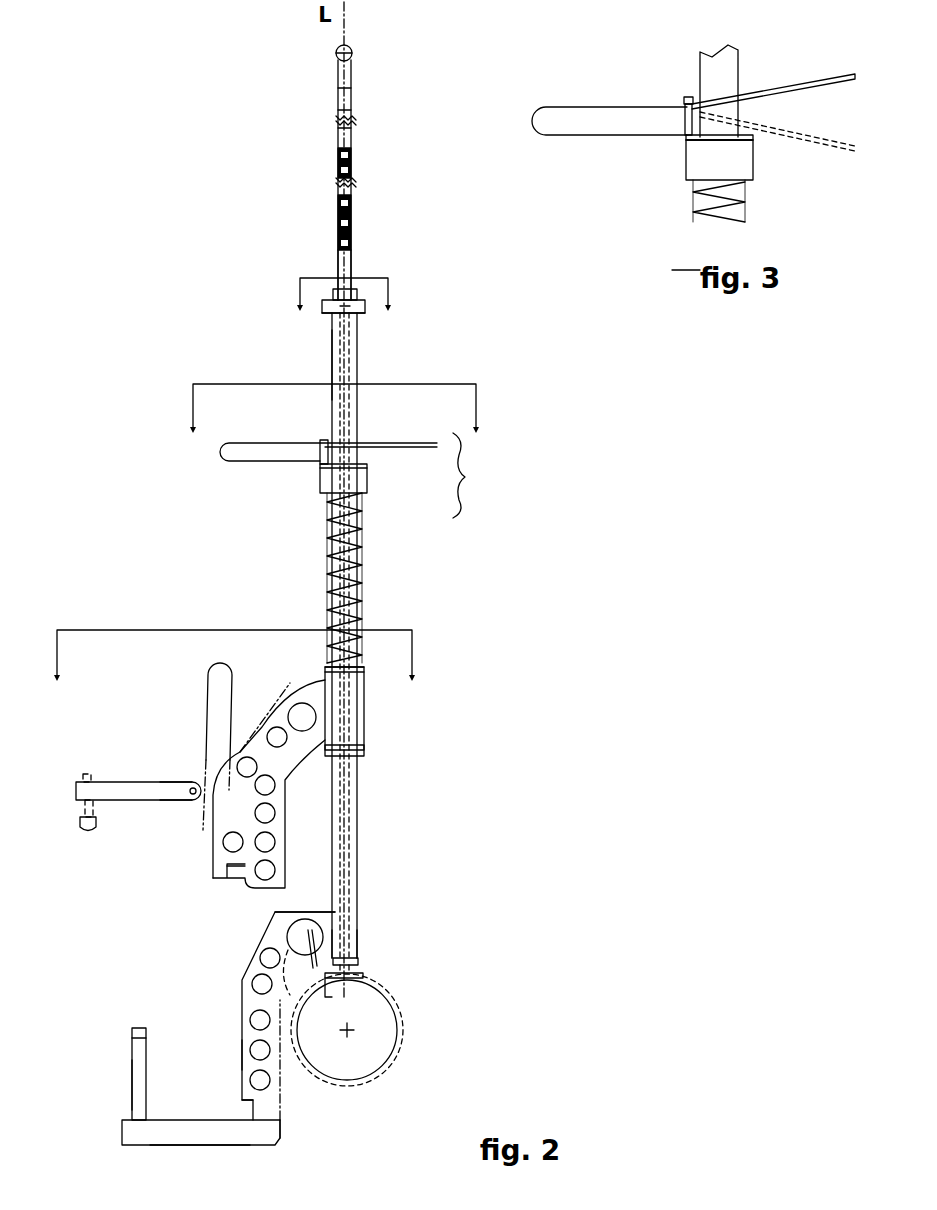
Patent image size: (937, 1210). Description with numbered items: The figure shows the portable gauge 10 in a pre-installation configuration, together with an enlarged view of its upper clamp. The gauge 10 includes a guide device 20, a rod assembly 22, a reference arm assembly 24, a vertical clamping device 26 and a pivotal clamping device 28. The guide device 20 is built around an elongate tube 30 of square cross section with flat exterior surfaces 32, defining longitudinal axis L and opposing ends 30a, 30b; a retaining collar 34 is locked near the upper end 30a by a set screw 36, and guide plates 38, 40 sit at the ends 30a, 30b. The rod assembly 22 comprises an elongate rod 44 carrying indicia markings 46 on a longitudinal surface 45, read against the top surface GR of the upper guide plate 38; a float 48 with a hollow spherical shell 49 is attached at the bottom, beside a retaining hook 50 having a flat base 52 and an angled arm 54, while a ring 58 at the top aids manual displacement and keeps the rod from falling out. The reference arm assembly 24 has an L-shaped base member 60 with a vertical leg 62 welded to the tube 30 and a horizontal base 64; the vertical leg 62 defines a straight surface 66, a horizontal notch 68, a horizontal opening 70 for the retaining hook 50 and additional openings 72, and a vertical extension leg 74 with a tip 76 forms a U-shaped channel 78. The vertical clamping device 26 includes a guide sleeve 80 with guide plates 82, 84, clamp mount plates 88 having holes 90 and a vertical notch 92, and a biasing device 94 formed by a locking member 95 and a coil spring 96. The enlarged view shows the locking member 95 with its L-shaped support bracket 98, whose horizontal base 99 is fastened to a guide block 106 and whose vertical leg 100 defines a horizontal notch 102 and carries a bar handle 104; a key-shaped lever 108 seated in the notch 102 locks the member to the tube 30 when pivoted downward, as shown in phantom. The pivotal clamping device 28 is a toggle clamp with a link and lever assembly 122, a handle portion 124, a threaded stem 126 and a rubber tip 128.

In FIG. 2, the portable gauge 10 is at (490, 554).
In FIG. 2, the guide device 20 is at (372, 361).
In FIG. 2, the rod assembly 22 is at (372, 237).
In FIG. 2, the reference arm assembly 24 is at (192, 1160).
In FIG. 2, the vertical clamping device 26 is at (292, 683).
In FIG. 2, the pivotal clamping device 28 is at (124, 774).
In FIG. 2, the elongate tube 30 is at (332, 365).
In FIG. 3, the elongate tube 30 is at (732, 63).
In FIG. 2, the upper end of tube 30a is at (366, 313).
In FIG. 2, the lower end of tube 30b is at (358, 948).
In FIG. 2, the exterior surfaces 32 is at (354, 422).
In FIG. 2, the retaining collar 34 is at (370, 302).
In FIG. 2, the set screw 36 is at (345, 304).
In FIG. 2, the upper guide plate 38 is at (338, 297).
In FIG. 2, the lower guide plate 40 is at (358, 962).
In FIG. 2, the elongate rod 44 is at (360, 103).
In FIG. 2, the longitudinal surface of rod 45 is at (358, 141).
In FIG. 2, the indicia markings 46 is at (338, 128).
In FIG. 2, the float 48 is at (402, 1039).
In FIG. 2, the spherical shell 49 is at (378, 1050).
In FIG. 2, the retaining hook 50 is at (308, 936).
In FIG. 2, the base of retaining hook 52 is at (330, 997).
In FIG. 2, the arm of retaining hook 54 is at (308, 945).
In FIG. 2, the ring 58 is at (336, 53).
In FIG. 2, the L-shaped base member 60 is at (287, 1152).
In FIG. 2, the vertical leg 62 is at (283, 1108).
In FIG. 2, the horizontal base 64 is at (224, 1146).
In FIG. 2, the straight surface 66 is at (242, 1056).
In FIG. 2, the horizontal notch 68 is at (246, 1117).
In FIG. 2, the horizontal opening 70 is at (333, 912).
In FIG. 2, the additional openings 72 is at (272, 1080).
In FIG. 2, the vertical extension leg 74 is at (132, 1093).
In FIG. 2, the tip 76 is at (130, 1029).
In FIG. 2, the U-shaped channel 78 is at (178, 1050).
In FIG. 2, the guide sleeve 80 is at (356, 730).
In FIG. 2, the upper guide plate of guide sleeve 82 is at (365, 667).
In FIG. 2, the lower guide plate of guide sleeve 84 is at (366, 752).
In FIG. 2, the clamp mount plates 88 is at (276, 710).
In FIG. 2, the holes 90 is at (238, 762).
In FIG. 2, the vertical notch 92 is at (238, 868).
In FIG. 2, the biasing device 94 is at (672, 272).
In FIG. 2, the locking member 95 is at (314, 474).
In FIG. 3, the locking member 95 is at (683, 170).
In FIG. 2, the spring 96 is at (362, 578).
In FIG. 3, the spring 96 is at (745, 212).
In FIG. 3, the L-shaped support bracket 98 is at (683, 138).
In FIG. 3, the horizontal base of support bracket 99 is at (750, 141).
In FIG. 3, the vertical leg of support bracket 100 is at (688, 118).
In FIG. 3, the horizontal notch 102 is at (688, 98).
In FIG. 3, the bar handle 104 is at (600, 108).
In FIG. 3, the guide block 106 is at (748, 182).
In FIG. 3, the key-shaped lever 108 is at (795, 87).
In FIG. 2, the pivoting link and lever assembly 122 is at (200, 812).
In FIG. 2, the handle portion 124 is at (210, 672).
In FIG. 2, the threaded stem 126 is at (85, 808).
In FIG. 2, the tip 128 is at (83, 829).